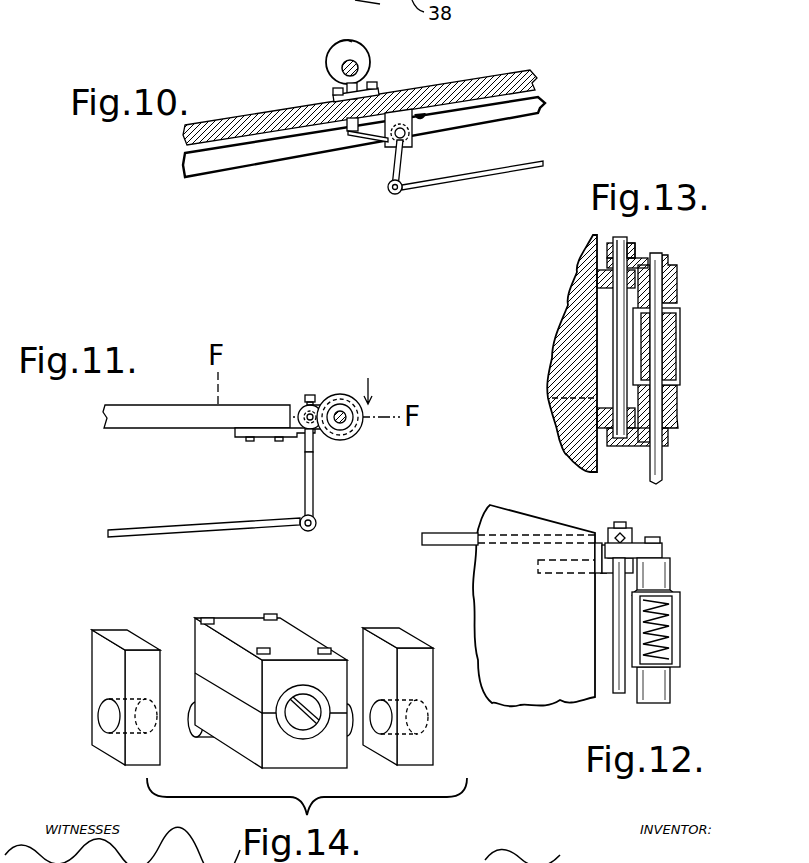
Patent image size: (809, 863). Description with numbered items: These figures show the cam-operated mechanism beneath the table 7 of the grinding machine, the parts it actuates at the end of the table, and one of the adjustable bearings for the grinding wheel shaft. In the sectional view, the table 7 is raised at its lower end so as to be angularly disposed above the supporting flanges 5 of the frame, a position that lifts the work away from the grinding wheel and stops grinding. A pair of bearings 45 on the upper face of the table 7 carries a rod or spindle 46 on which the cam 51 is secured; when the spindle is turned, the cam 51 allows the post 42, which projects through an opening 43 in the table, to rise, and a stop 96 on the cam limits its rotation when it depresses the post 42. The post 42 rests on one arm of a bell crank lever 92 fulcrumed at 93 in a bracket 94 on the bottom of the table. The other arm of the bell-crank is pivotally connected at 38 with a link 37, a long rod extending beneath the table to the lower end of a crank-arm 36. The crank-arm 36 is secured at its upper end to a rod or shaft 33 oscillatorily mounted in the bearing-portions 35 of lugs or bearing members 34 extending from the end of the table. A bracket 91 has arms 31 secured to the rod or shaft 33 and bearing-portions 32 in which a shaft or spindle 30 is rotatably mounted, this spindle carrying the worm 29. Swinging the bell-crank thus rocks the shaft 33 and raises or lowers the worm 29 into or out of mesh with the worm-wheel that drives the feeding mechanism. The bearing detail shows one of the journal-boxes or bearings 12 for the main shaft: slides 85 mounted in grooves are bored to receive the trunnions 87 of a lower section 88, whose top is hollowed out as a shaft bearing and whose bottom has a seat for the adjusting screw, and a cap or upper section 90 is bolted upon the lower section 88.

In FIG. 10, the supporting flanges 5 is at (541, 106).
In FIG. 10, the table 7 is at (519, 73).
In FIG. 11, the table 7 is at (186, 428).
In FIG. 13, the table 7 is at (568, 368).
In FIG. 12, the table 7 is at (534, 605).
In FIG. 14, the journal-boxes or bearings 12 is at (287, 632).
In FIG. 13, the worm 29 is at (670, 360).
In FIG. 12, the worm 29 is at (666, 641).
In FIG. 11, the shaft or spindle 30 is at (336, 402).
In FIG. 13, the shaft or spindle 30 is at (662, 465).
In FIG. 12, the shaft or spindle 30 is at (655, 544).
In FIG. 11, the arms 31 is at (313, 438).
In FIG. 13, the arms 31 is at (608, 262).
In FIG. 12, the arms 31 is at (605, 548).
In FIG. 11, the bearing-portions 32 is at (351, 437).
In FIG. 13, the bearing-portions 32 is at (677, 285).
In FIG. 12, the bearing-portions 32 is at (667, 581).
In FIG. 11, the rod or shaft 33 is at (293, 405).
In FIG. 13, the rod or shaft 33 is at (617, 343).
In FIG. 12, the rod or shaft 33 is at (614, 656).
In FIG. 11, the lugs or bearing members 34 is at (292, 437).
In FIG. 13, the lugs or bearing members 34 is at (550, 398).
In FIG. 12, the lugs or bearing members 34 is at (600, 584).
In FIG. 11, the bearing-portions 35 is at (296, 405).
In FIG. 13, the bearing-portions 35 is at (610, 295).
In FIG. 11, the crank-arm 36 is at (314, 491).
In FIG. 13, the crank-arm 36 is at (632, 248).
In FIG. 12, the crank-arm 36 is at (633, 535).
In FIG. 10, the link 37 is at (481, 170).
In FIG. 11, the link 37 is at (190, 536).
In FIG. 12, the link 37 is at (443, 532).
In FIG. 10, the pivotal connection 38 is at (394, 195).
In FIG. 10, the post 42 is at (347, 122).
In FIG. 10, the opening 43 is at (322, 98).
In FIG. 10, the bearings 45 is at (336, 97).
In FIG. 10, the rod or spindle 46 is at (347, 63).
In FIG. 10, the cam 51 is at (371, 60).
In FIG. 14, the slides 85 is at (135, 757).
In FIG. 14, the trunnions 87 is at (197, 726).
In FIG. 14, the lower section 88 is at (303, 727).
In FIG. 14, the caps or upper sections 90 is at (271, 686).
In FIG. 11, the bracket 91 is at (358, 431).
In FIG. 13, the bracket 91 is at (682, 327).
In FIG. 12, the bracket 91 is at (690, 620).
In FIG. 10, the bell crank lever 92 is at (405, 161).
In FIG. 10, the fulcrum 93 is at (395, 143).
In FIG. 10, the bracket 94 is at (402, 112).
In FIG. 10, the stop 96 is at (355, 41).